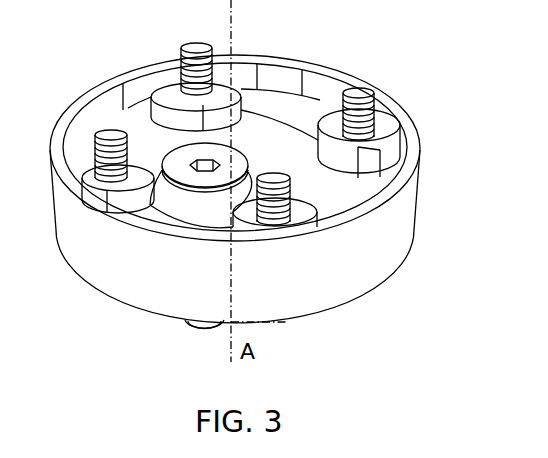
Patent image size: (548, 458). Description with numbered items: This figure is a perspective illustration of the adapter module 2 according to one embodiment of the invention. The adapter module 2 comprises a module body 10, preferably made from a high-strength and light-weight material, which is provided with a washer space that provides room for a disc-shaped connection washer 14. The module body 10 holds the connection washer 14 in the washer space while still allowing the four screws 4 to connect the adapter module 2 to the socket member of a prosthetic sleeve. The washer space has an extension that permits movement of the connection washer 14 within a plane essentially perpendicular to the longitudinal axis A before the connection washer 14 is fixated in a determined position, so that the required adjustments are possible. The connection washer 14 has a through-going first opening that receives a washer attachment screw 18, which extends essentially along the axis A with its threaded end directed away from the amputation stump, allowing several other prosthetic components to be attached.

The adapter module 2 is at (418, 65).
The screws 4 is at (182, 44).
The module body 10 is at (404, 220).
The connection washer 14 is at (270, 142).
The washer attachment screw 18 is at (180, 163).